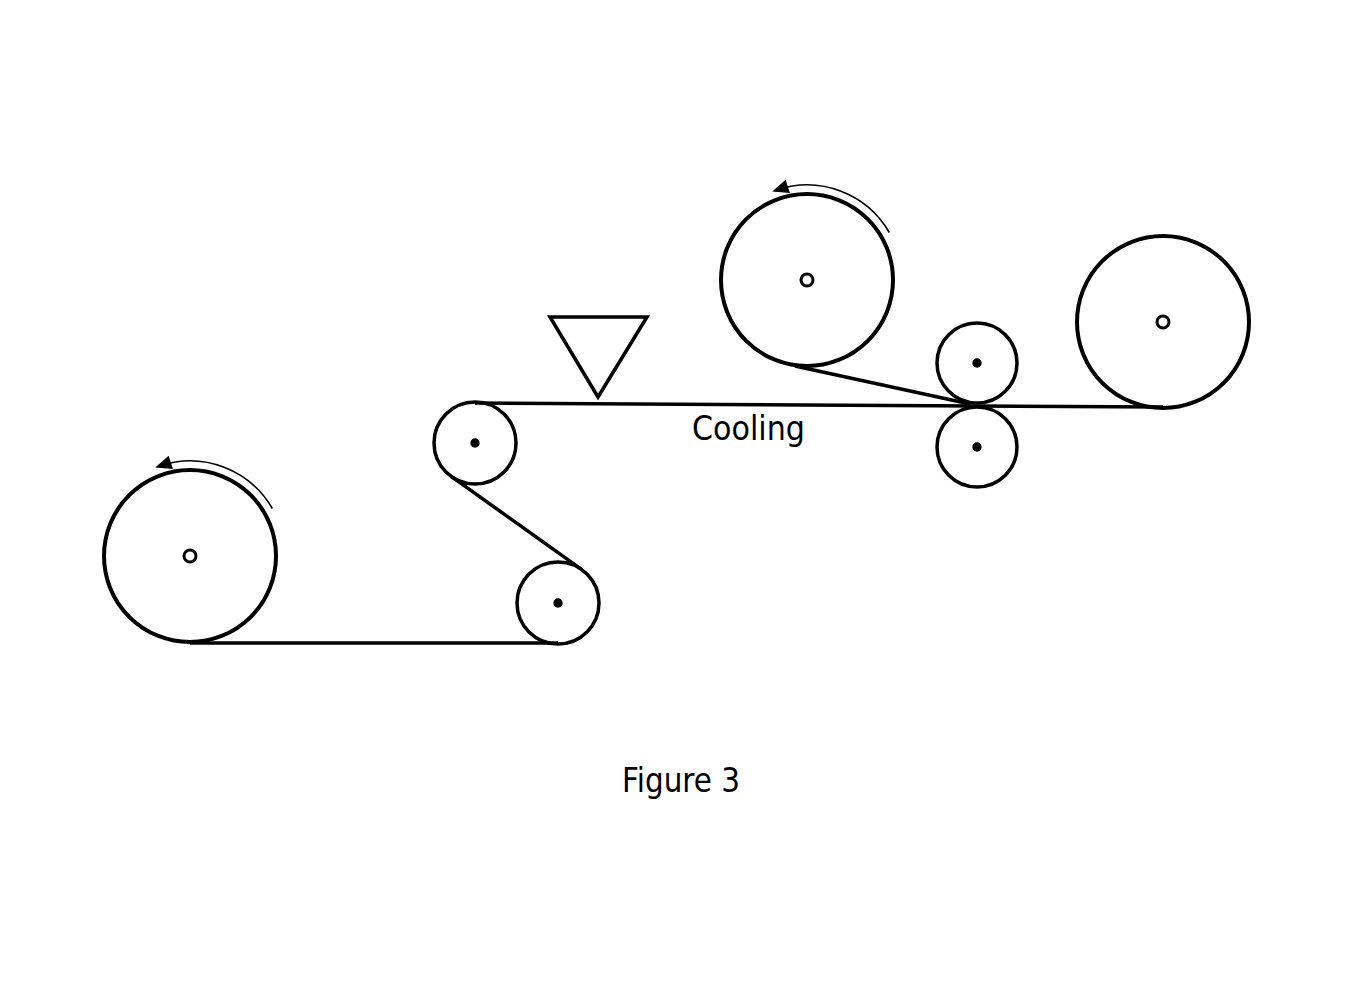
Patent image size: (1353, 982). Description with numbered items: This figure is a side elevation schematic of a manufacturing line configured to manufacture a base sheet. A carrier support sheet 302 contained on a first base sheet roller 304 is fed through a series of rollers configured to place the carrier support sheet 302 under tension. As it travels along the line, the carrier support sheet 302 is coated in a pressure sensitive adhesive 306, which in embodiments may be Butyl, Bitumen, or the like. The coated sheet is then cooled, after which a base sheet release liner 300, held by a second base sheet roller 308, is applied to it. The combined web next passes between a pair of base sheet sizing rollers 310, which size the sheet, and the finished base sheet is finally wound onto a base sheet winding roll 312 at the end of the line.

The base sheet release liner 300 is at (820, 178).
The carrier support sheet 302 is at (187, 440).
The first base sheet roller 304 is at (170, 643).
The pressure sensitive adhesive 306 is at (597, 307).
The second base sheet roller 308 is at (753, 210).
The base sheet sizing rollers 310 is at (980, 492).
The base sheet winding roll 312 is at (1158, 232).